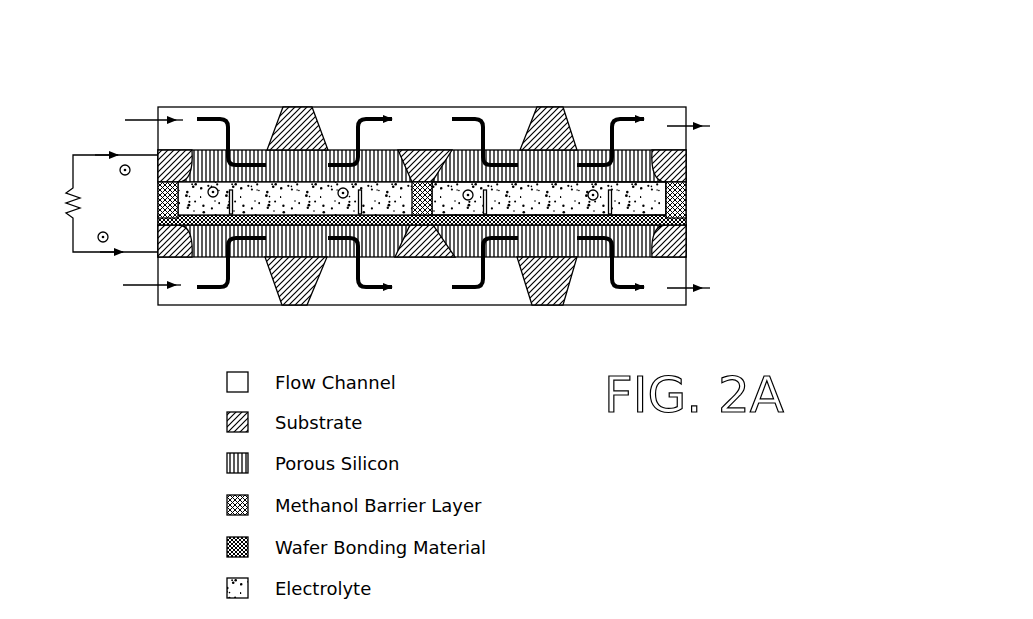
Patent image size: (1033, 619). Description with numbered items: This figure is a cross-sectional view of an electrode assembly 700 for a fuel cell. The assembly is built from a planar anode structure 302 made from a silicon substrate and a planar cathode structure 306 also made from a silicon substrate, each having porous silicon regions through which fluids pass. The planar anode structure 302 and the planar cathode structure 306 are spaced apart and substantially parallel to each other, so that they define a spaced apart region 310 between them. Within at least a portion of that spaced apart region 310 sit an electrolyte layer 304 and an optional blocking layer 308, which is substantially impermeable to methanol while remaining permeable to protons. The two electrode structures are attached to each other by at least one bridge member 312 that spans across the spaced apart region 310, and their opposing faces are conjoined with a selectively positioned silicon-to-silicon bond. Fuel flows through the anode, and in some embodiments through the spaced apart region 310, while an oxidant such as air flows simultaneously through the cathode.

The electrode assembly 700 is at (194, 66).
The planar anode structure 302 is at (687, 165).
The electrolyte layer 304 is at (650, 203).
The planar cathode structure 306 is at (687, 247).
The blocking layer 308 is at (687, 222).
The spaced apart region 310 is at (545, 199).
The bridge member 312 is at (415, 212).